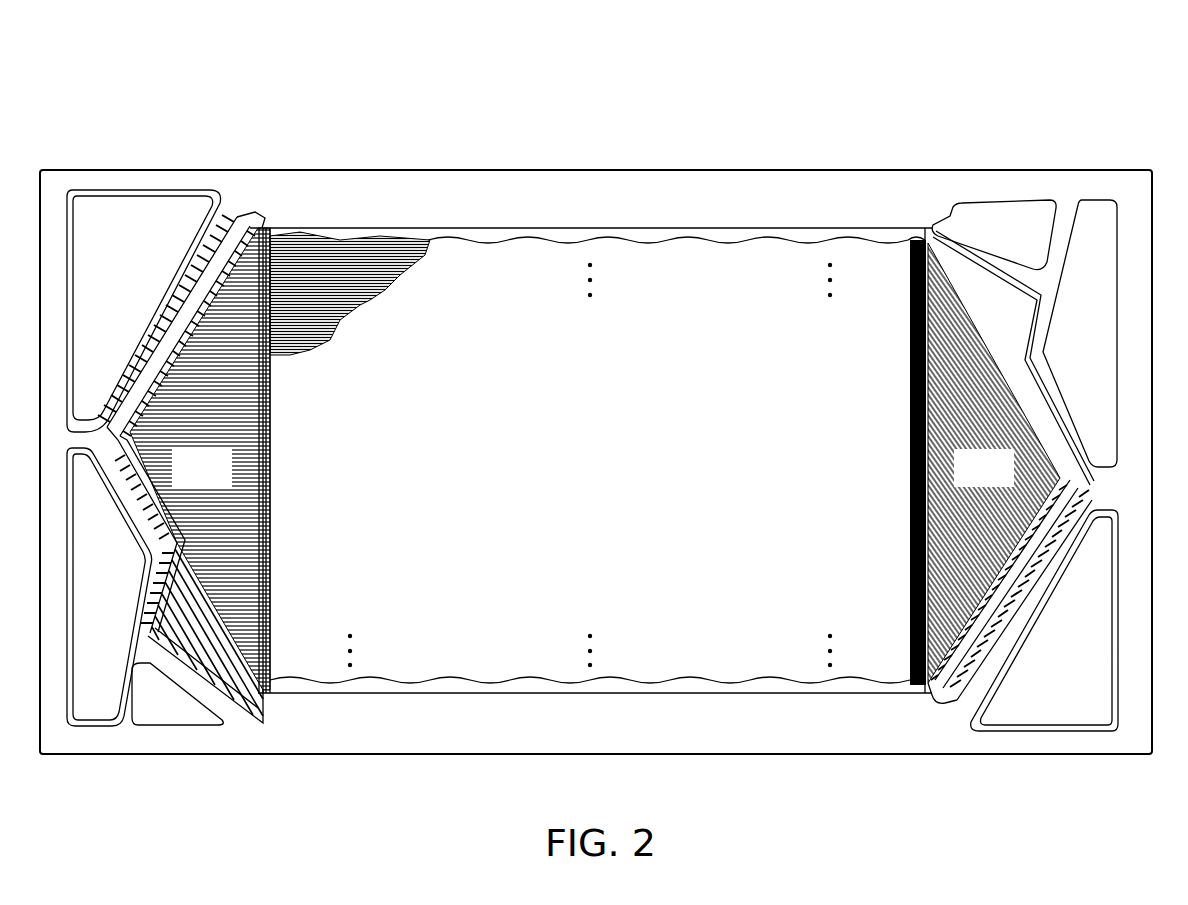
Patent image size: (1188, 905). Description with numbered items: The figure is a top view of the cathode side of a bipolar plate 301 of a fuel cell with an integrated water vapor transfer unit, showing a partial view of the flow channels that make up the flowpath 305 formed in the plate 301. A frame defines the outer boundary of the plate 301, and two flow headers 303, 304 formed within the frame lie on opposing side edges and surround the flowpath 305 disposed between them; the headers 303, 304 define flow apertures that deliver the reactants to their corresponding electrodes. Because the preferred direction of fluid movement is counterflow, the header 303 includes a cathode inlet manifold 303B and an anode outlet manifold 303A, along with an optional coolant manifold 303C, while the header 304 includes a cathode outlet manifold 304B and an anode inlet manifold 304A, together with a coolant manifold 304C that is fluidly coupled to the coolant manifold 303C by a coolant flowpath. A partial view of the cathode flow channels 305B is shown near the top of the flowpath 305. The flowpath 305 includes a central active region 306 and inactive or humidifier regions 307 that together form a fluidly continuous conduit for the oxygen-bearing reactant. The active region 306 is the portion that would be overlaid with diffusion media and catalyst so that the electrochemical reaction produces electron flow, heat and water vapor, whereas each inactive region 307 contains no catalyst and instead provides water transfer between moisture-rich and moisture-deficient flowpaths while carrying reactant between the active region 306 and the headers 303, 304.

The bipolar plate 301 is at (419, 110).
The flow header 303 is at (1160, 770).
The anode outlet manifold 303A is at (1045, 234).
The cathode inlet manifold 303B is at (1100, 660).
The coolant manifold 303C is at (1112, 372).
The flow header 304 is at (275, 770).
The anode inlet manifold 304A is at (190, 710).
The cathode outlet manifold 304B is at (150, 278).
The coolant manifold 304C is at (140, 576).
The flowpath 305 is at (1010, 156).
The cathode flow channels 305B is at (368, 296).
The active region 306 is at (628, 482).
The inactive region 307 is at (225, 482).